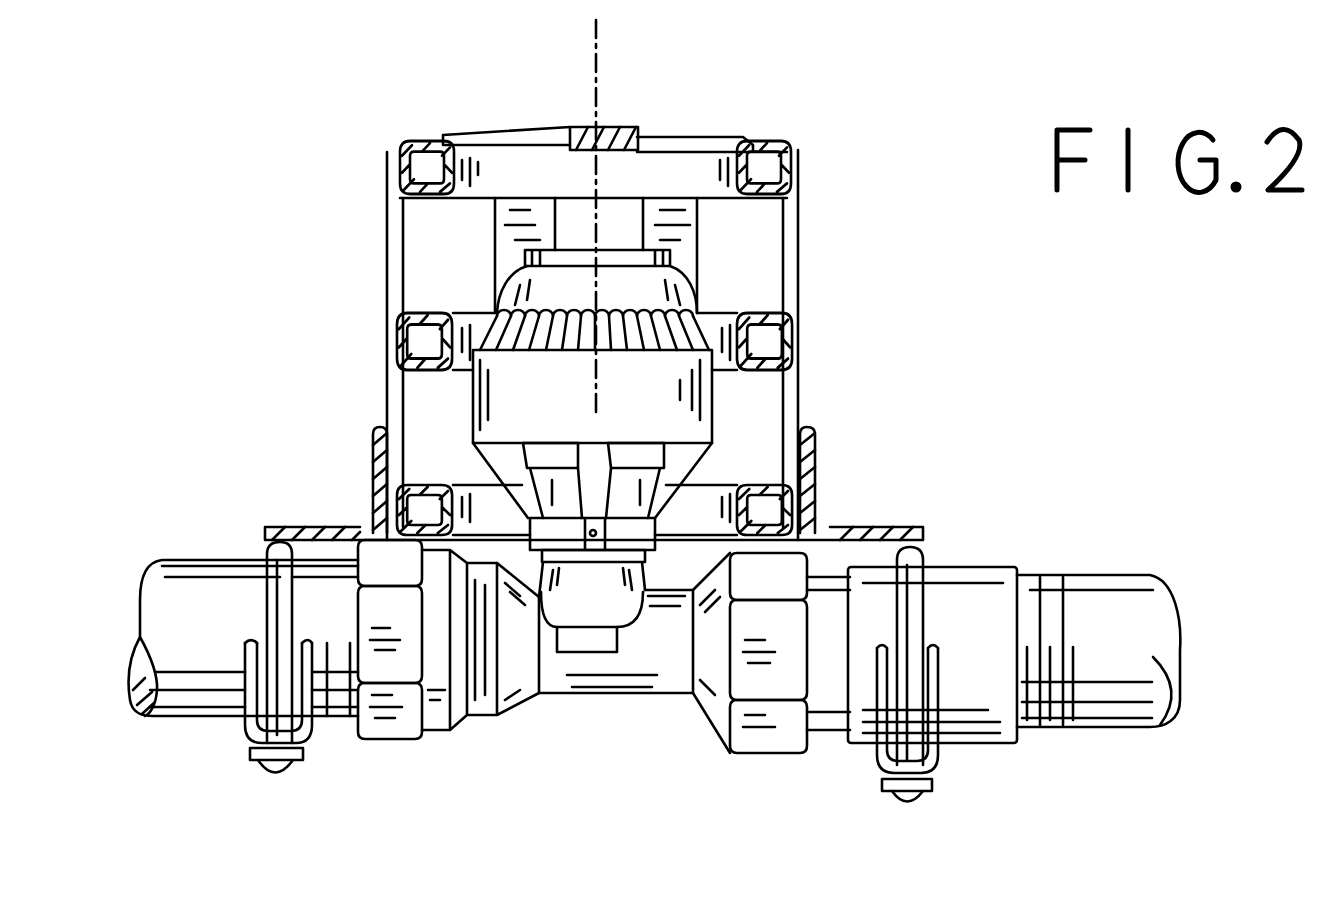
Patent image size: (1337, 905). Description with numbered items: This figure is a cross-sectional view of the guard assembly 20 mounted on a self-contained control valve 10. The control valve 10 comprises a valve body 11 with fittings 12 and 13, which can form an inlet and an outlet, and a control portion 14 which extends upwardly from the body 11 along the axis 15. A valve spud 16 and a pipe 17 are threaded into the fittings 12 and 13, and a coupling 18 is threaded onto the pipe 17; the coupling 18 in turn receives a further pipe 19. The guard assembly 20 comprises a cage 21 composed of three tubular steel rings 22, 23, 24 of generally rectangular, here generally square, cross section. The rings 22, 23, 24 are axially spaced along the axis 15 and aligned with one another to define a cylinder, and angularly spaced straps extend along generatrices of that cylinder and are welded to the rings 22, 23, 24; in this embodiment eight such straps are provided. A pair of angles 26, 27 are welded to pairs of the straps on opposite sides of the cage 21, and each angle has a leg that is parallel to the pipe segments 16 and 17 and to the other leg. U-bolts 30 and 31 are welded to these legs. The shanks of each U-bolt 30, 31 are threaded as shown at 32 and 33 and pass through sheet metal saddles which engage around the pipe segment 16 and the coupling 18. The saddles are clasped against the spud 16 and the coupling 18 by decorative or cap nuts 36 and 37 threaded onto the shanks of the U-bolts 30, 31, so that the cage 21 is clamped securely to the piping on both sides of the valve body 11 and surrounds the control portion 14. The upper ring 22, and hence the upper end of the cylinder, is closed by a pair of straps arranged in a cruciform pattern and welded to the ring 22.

The self-contained control valve 10 is at (584, 699).
The valve body 11 is at (663, 645).
The fitting 12 is at (383, 715).
The fitting 13 is at (770, 733).
The control portion 14 is at (672, 405).
The axis 15 is at (596, 77).
The valve spud 16 is at (187, 620).
The pipe 17 is at (830, 663).
The coupling 18 is at (977, 600).
The further pipe 19 is at (1112, 667).
The guard assembly 20 is at (368, 264).
The cage 21 is at (800, 193).
The tubular steel ring 22 is at (430, 193).
The tubular steel ring 23 is at (430, 313).
The tubular steel ring 24 is at (430, 468).
The angle 26 is at (822, 457).
The angle 27 is at (370, 487).
The U-bolt 30 is at (898, 605).
The U-bolt 31 is at (280, 585).
The threaded shank 32 is at (937, 763).
The threaded shank 33 is at (247, 692).
The cap nut 36 is at (903, 805).
The cap nut 37 is at (283, 758).